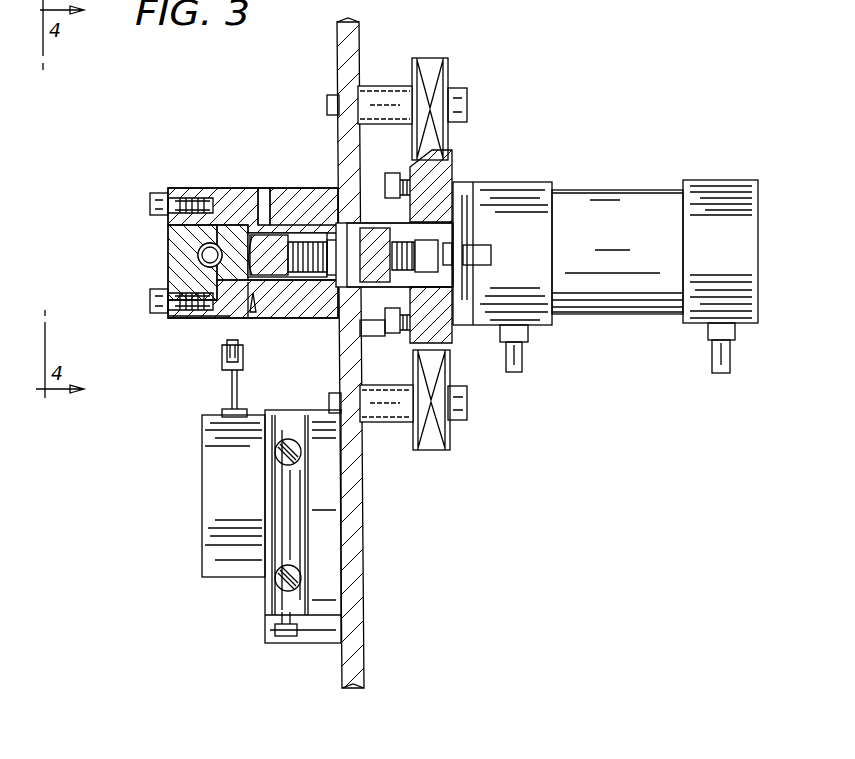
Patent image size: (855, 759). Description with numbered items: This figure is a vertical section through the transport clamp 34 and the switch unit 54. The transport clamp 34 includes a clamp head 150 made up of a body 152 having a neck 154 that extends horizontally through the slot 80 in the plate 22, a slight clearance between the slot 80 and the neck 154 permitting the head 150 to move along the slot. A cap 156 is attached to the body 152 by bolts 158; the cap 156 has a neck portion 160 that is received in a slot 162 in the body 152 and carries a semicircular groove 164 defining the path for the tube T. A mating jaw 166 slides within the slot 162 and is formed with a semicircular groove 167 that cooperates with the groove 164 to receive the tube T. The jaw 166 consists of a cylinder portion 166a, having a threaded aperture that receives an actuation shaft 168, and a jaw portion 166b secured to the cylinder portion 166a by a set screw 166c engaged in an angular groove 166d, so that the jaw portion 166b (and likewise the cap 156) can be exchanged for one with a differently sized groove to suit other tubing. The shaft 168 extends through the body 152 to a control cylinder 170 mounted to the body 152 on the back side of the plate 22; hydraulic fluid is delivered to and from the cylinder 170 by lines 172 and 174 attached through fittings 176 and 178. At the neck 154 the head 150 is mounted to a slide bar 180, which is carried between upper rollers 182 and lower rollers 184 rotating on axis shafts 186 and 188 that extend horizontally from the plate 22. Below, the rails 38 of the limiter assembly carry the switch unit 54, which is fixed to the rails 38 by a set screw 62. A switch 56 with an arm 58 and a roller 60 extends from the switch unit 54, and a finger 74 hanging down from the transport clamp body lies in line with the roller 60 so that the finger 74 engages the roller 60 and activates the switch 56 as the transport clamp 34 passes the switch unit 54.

The plate 22 is at (359, 38).
The transport clamp 34 is at (137, 112).
The rails 38 is at (300, 576).
The switch unit 54 is at (265, 527).
The switch 56 is at (268, 418).
The arm 58 is at (230, 414).
The roller 60 is at (231, 388).
The set screw 62 is at (285, 636).
The finger 74 is at (220, 350).
The slot 80 is at (374, 322).
The clamp head 150 is at (173, 193).
The body 152 is at (253, 188).
The neck 154 is at (453, 168).
The cap 156 is at (188, 234).
The bolts 158 is at (152, 204).
The neck portion 160 is at (204, 321).
The slot 162 is at (302, 233).
The semicircular groove 164 is at (204, 260).
The mating jaw 166 is at (252, 322).
The cylinder portion 166a is at (285, 293).
The jaw portion 166b is at (225, 215).
The set screw 166c is at (298, 190).
The angular groove 166d is at (259, 321).
The semicircular groove 167 is at (236, 245).
The actuation shaft 168 is at (362, 198).
The control cylinder 170 is at (650, 190).
The line 172 is at (523, 360).
The line 174 is at (712, 358).
The fitting 176 is at (530, 334).
The fitting 178 is at (708, 332).
The slide bar 180 is at (456, 184).
The upper rollers 182 is at (450, 62).
The lower rollers 184 is at (450, 430).
The axis shafts 186 is at (467, 107).
The axis shafts 188 is at (468, 403).
The tube T is at (198, 255).